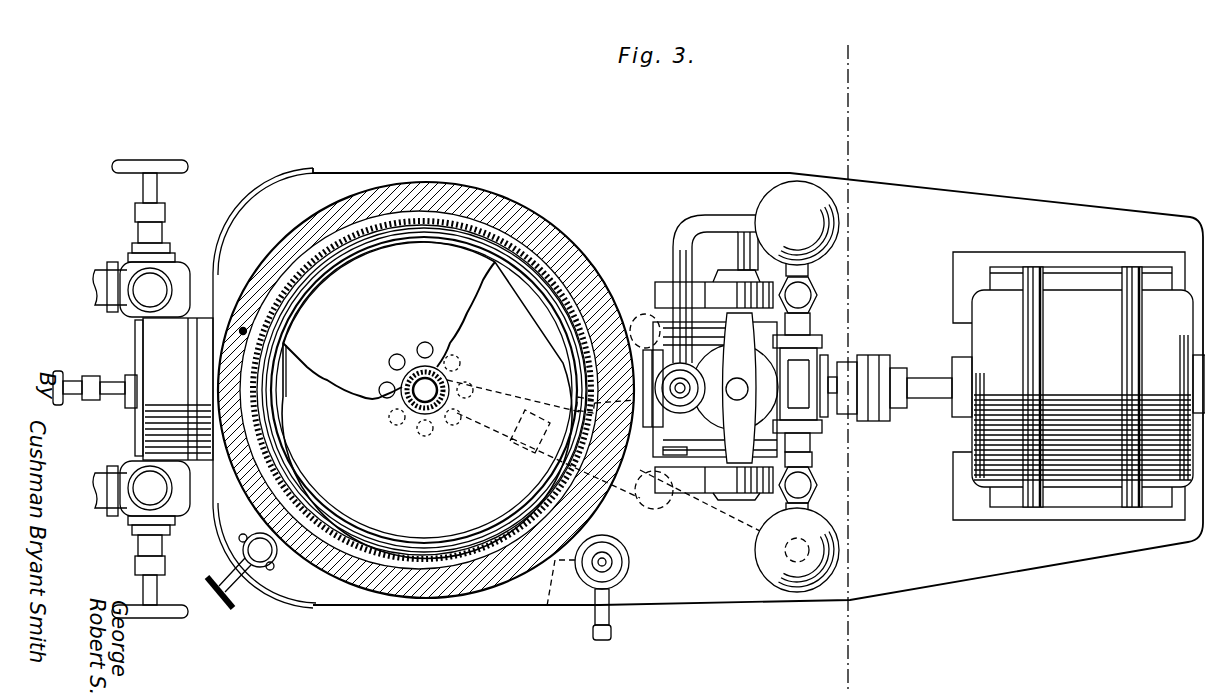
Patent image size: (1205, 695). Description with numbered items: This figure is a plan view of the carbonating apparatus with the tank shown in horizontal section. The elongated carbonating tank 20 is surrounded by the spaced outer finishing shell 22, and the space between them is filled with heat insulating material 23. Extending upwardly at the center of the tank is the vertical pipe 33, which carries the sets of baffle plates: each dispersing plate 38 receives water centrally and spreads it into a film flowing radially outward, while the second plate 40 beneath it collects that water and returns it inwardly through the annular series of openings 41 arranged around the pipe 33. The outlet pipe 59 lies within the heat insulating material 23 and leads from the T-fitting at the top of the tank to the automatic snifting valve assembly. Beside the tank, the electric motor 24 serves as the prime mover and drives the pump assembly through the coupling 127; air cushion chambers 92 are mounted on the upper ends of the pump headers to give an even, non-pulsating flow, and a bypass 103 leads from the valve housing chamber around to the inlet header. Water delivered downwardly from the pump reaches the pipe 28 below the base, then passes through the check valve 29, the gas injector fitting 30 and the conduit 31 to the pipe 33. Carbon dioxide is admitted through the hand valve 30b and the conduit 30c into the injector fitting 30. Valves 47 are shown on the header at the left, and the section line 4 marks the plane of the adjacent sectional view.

The section line 4- 4 is at (850, 52).
The carbonating tank 20 is at (392, 600).
The outer finishing shell 22 is at (505, 600).
The heat insulating material 23 is at (437, 600).
The electric motor 24 is at (1047, 305).
The pipe 28 is at (737, 528).
The check valve 29 is at (656, 509).
The gas injector fitting 30 is at (527, 455).
The hand valve 30b is at (632, 567).
The conduit 30c is at (549, 597).
The conduit 31 is at (477, 423).
The pipe 33 is at (420, 400).
The dispersing plate 38 is at (373, 507).
The second plate 40 is at (402, 240).
The openings 41 is at (422, 345).
The valves 47 is at (105, 290).
The outlet pipe 59 is at (247, 331).
The air cushion chambers 92 is at (797, 182).
The bypass 103 is at (675, 257).
The coupling 127 is at (837, 370).